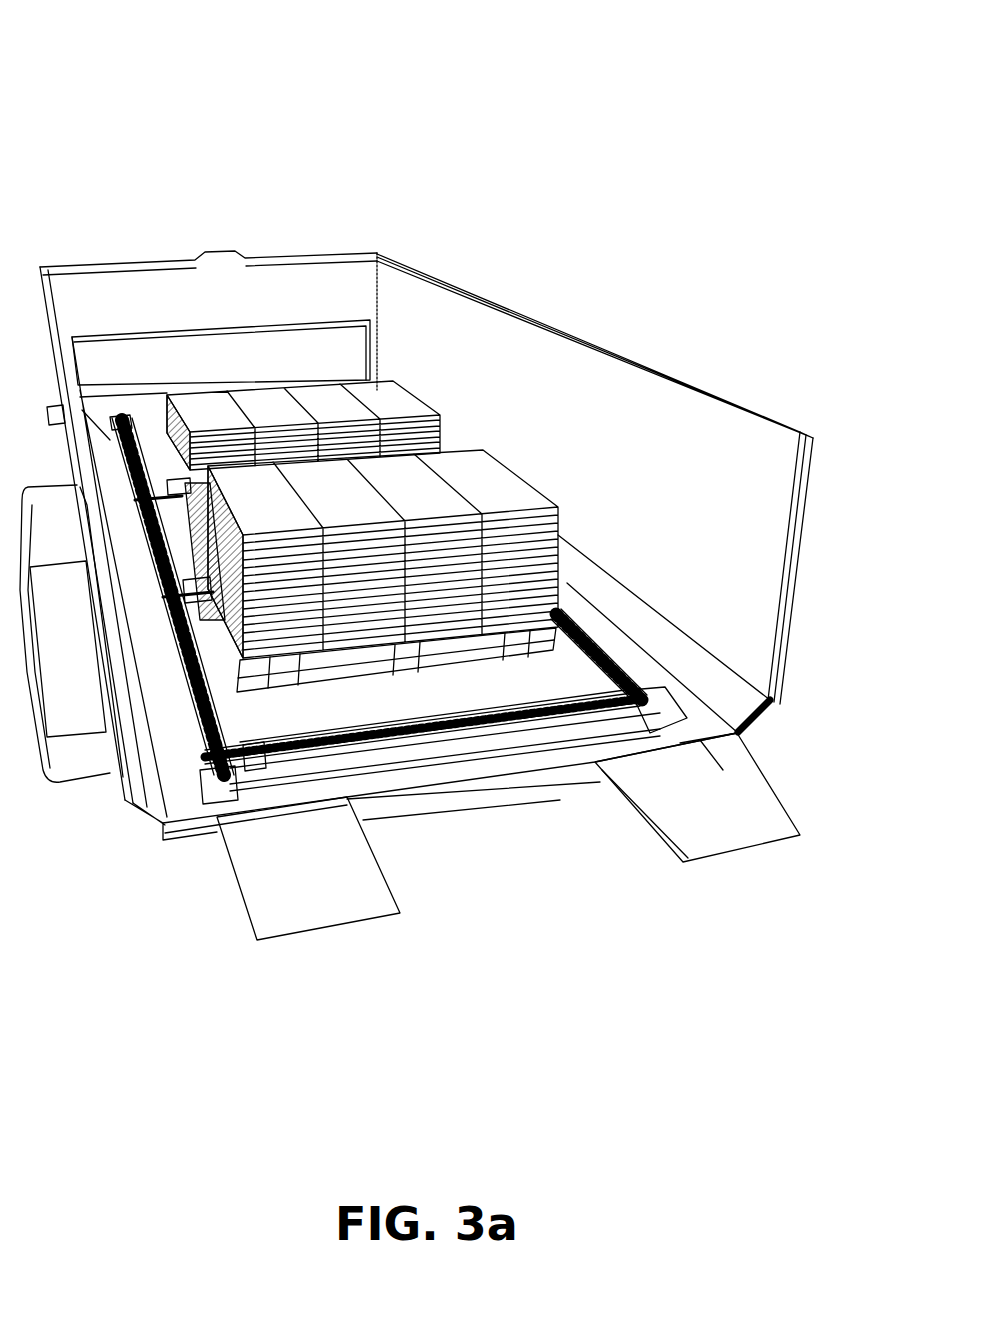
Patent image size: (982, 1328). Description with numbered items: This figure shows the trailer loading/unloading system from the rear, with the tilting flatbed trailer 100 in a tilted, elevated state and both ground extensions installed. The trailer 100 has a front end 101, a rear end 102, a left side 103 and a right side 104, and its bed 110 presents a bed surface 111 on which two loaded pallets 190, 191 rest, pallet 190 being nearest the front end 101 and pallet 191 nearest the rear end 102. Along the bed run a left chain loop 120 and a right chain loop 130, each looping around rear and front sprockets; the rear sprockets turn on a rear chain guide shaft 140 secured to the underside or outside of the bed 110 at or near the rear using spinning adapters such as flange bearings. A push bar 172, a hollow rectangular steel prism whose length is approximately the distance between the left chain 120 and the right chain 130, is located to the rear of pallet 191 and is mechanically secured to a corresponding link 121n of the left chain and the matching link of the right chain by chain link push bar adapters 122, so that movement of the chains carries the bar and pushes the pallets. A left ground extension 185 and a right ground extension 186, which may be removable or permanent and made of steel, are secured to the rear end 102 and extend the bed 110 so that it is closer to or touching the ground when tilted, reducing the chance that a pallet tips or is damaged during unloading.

The tilting flatbed trailer 100 is at (80, 63).
The front end of tilting flatbed trailer 101 is at (363, 247).
The rear end of tilting flatbed trailer 102 is at (473, 808).
The left side of tilting flatbed trailer 103 is at (120, 773).
The right side of tilting flatbed trailer 104 is at (600, 333).
The bed of tilting flatbed trailer 110 is at (730, 742).
The surface of bed of tilting flatbed trailer 111 is at (700, 720).
The left chain loop 120 is at (205, 733).
The link in left chain 121n is at (155, 482).
The chain link push bar adapter 122 is at (215, 790).
The right chain loop 130 is at (620, 657).
The rear chain guide shaft 140 is at (517, 788).
The push bar 172 is at (400, 730).
The left ground extension 185 is at (310, 902).
The right ground extension 186 is at (708, 840).
The loaded pallet 190 is at (400, 407).
The loaded pallet 191 is at (500, 490).